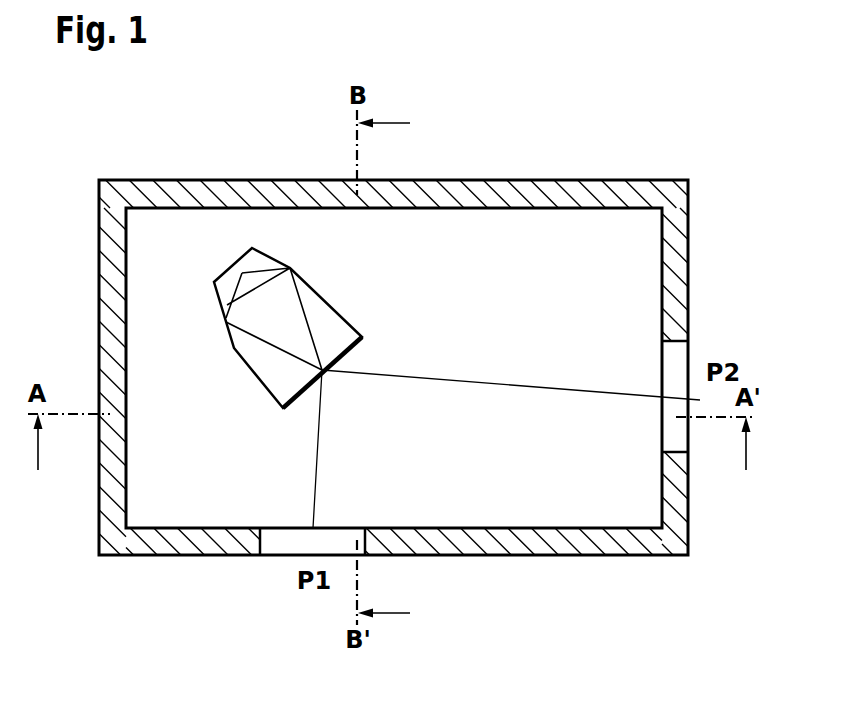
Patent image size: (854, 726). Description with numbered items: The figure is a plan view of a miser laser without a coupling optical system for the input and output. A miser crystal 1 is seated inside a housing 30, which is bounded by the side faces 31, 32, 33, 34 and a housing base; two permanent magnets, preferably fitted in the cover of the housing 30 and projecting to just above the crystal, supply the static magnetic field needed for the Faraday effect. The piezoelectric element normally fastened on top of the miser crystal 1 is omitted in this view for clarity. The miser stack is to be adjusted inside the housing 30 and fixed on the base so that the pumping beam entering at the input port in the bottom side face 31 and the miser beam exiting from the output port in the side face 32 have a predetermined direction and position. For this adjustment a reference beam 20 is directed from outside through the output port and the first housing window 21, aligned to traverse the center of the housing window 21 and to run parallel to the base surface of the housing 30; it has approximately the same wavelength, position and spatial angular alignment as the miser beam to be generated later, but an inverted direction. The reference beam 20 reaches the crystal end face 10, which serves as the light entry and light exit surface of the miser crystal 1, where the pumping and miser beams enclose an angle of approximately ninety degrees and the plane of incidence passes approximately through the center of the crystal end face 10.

The miser crystal 1 is at (325, 318).
The crystal end face 10 is at (350, 350).
The reference beam 20 is at (547, 387).
The first housing window 21 is at (678, 358).
The housing 30 is at (478, 160).
The side face 31 is at (522, 556).
The side face 32 is at (678, 270).
The side face 33 is at (243, 192).
The side face 34 is at (110, 268).